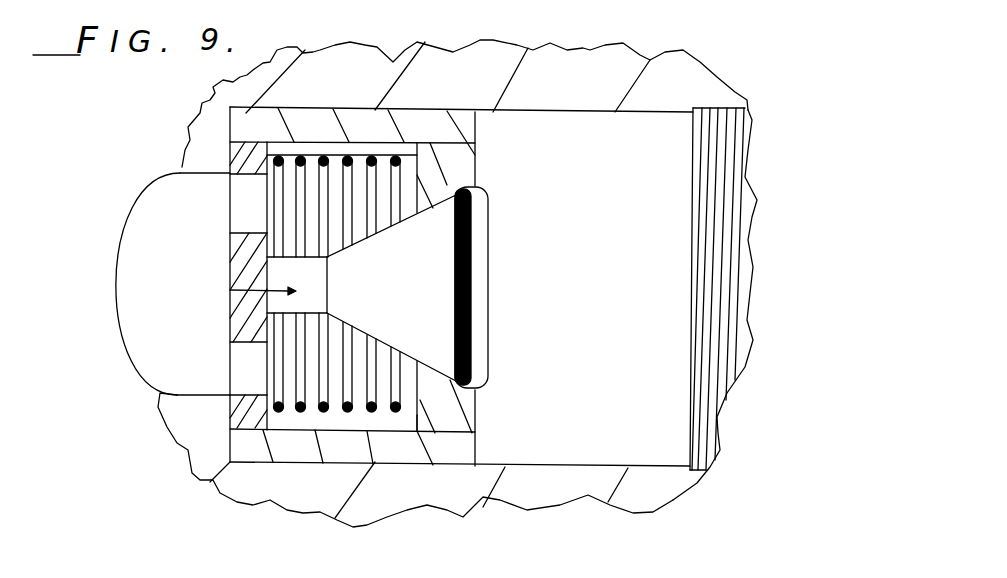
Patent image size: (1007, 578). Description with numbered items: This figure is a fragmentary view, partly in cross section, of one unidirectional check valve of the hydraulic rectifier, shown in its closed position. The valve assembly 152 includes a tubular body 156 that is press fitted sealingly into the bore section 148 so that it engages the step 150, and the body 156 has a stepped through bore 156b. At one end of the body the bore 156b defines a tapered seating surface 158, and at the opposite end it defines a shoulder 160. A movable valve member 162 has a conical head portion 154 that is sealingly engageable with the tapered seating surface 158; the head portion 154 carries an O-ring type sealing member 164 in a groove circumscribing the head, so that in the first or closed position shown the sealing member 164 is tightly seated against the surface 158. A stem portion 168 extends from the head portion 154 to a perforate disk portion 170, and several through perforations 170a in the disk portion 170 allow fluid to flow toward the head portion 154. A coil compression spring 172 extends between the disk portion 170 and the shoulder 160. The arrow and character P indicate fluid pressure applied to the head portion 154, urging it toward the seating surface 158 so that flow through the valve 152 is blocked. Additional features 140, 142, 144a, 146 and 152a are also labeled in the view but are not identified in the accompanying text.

The housing 140 is at (617, 62).
The housing bottom wall 142 is at (527, 465).
The outlet passage wall 144a is at (720, 133).
The inlet bore 146 is at (182, 173).
The bore section 148 is at (416, 110).
The step 150 is at (252, 113).
The valve assembly 152 is at (514, 310).
The valve assembly base 152a is at (342, 462).
The conical head portion 154 is at (485, 237).
The tubular body 156 is at (253, 452).
The stepped through bore 156b is at (383, 422).
The tapered seating surface 158 is at (440, 368).
The shoulder 160 is at (410, 405).
The movable valve member 162 is at (230, 290).
The sealing member 164 is at (472, 275).
The stem portion 168 is at (313, 272).
The perforate disk portion 170 is at (230, 180).
The through perforations 170a is at (230, 219).
The coil compression spring 172 is at (292, 405).
The fluid pressure P is at (494, 197).